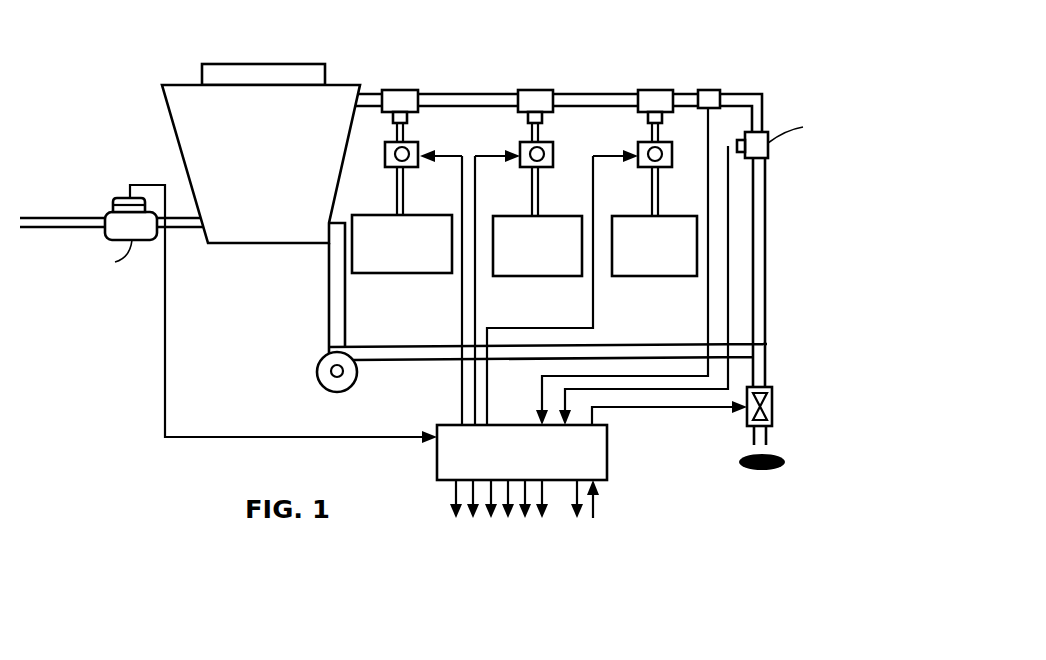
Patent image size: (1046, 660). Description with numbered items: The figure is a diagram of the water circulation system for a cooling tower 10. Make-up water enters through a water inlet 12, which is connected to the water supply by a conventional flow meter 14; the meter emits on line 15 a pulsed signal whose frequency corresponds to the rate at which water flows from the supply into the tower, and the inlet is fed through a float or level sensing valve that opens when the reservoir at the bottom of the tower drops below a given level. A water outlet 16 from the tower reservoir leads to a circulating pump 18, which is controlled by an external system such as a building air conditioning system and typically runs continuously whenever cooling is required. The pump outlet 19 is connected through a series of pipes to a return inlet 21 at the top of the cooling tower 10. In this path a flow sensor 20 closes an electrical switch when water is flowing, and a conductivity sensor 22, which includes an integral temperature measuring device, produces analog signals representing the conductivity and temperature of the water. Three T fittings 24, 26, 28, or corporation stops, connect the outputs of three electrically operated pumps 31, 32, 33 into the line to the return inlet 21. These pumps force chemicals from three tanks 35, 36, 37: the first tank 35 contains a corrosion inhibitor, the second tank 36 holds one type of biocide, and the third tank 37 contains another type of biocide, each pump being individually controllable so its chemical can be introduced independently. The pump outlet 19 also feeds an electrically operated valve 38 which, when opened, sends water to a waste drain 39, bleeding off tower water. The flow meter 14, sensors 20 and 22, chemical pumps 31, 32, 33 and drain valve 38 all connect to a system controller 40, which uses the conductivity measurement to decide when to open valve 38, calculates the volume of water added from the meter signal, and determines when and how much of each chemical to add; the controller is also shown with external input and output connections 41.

The cooling tower 10 is at (252, 189).
The water inlet 12 is at (178, 228).
The flow meter 14 is at (113, 212).
The line 15 is at (165, 363).
The water outlet 16 is at (333, 311).
The circulating pump 18 is at (331, 373).
The pump outlet 19 is at (441, 361).
The flow sensor 20 is at (706, 90).
The return inlet 21 is at (365, 96).
The conductivity sensor 22 is at (768, 150).
The T fitting 24 is at (396, 92).
The T fitting 26 is at (538, 92).
The T fitting 28 is at (658, 92).
The pump 31 is at (390, 167).
The pump 32 is at (530, 143).
The pump 33 is at (647, 143).
The first tank 35 is at (433, 273).
The second tank 36 is at (553, 277).
The third tank 37 is at (673, 277).
The valve 38 is at (774, 400).
The waste drain 39 is at (750, 458).
The system controller 40 is at (441, 449).
The external I/O lines 41 is at (434, 499).